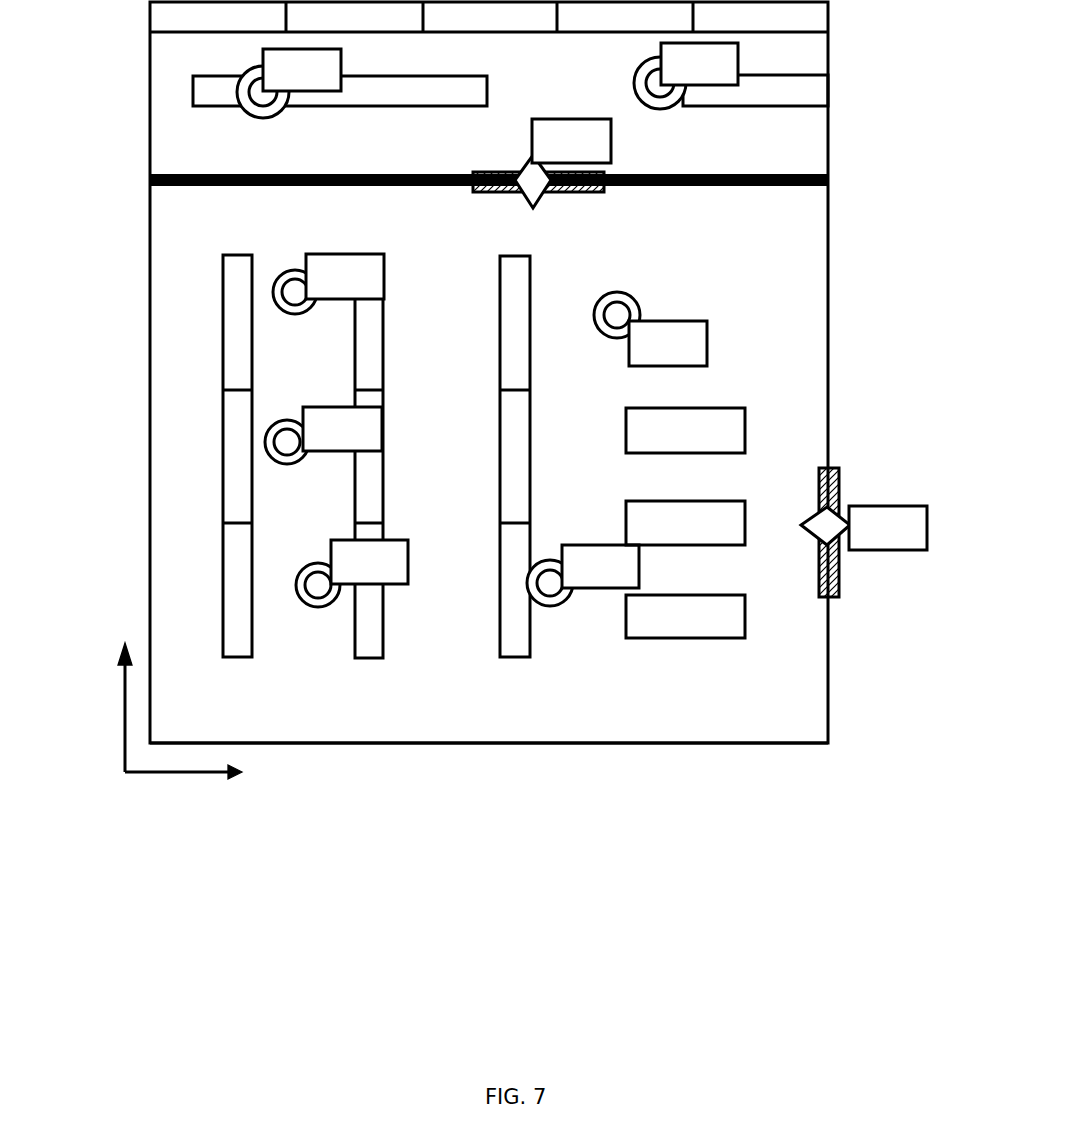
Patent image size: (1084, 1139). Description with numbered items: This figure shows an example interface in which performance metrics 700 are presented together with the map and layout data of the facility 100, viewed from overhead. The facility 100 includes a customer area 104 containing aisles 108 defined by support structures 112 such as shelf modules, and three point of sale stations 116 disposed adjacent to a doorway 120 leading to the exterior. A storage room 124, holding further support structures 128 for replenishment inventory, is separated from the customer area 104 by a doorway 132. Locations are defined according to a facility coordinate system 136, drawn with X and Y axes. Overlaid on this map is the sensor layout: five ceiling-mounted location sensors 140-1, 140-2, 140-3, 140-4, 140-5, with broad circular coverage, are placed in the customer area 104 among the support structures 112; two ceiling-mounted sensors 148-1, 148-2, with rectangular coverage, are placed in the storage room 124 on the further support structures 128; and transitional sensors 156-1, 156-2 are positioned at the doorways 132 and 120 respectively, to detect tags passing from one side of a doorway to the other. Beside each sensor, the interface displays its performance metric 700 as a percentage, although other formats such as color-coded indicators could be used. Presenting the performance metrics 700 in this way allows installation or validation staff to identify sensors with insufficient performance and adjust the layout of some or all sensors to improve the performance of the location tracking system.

The facility 100 is at (832, 320).
The customer area 104 is at (489, 502).
The aisles 108 is at (307, 483).
The support structures 112 is at (222, 422).
The point of sale station 116 is at (685, 523).
The doorway 120 is at (840, 485).
The storage room 124 is at (489, 91).
The further support structures 128 is at (810, 90).
The doorway 132 is at (585, 194).
The facility coordinate system 136 is at (125, 772).
The ceiling-mounted location sensor 140-1 is at (292, 270).
The ceiling-mounted location sensor 140-2 is at (288, 420).
The ceiling-mounted location sensor 140-3 is at (357, 534).
The ceiling-mounted location sensor 140-4 is at (618, 340).
The ceiling-mounted location sensor 140-5 is at (550, 560).
The ceiling-mounted location sensor 148-1 is at (237, 92).
The ceiling-mounted location sensor 148-2 is at (633, 83).
The transitional location sensor 156-1 is at (522, 203).
The transitional location sensor 156-2 is at (810, 532).
The performance metrics 700 is at (396, 540).